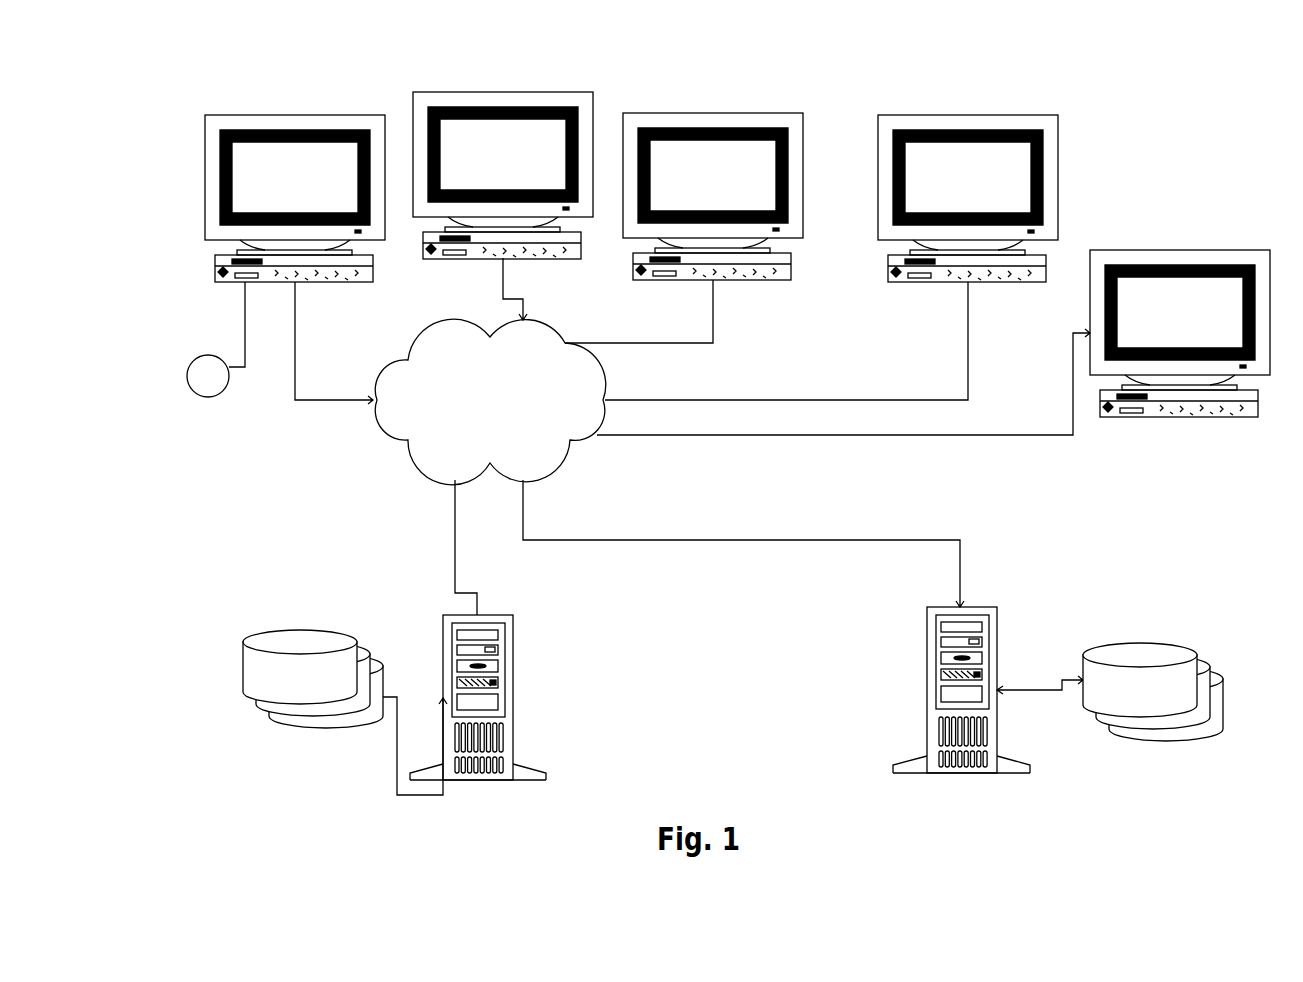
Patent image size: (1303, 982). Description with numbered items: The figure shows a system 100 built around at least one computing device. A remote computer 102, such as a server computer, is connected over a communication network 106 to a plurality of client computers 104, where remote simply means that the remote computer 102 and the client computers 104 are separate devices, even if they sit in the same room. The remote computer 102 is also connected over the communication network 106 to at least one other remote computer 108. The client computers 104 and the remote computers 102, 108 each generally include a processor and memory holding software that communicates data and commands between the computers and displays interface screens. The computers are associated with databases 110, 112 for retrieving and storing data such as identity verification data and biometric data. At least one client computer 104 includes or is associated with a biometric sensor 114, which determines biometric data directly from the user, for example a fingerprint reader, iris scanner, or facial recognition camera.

The system 100 is at (727, 421).
The remote computer 102 is at (477, 612).
The client computer 104 is at (285, 113).
The communication network 106 is at (600, 381).
The remote computer 108 is at (987, 605).
The database 110 is at (290, 627).
The database 112 is at (1133, 642).
The biometric sensor 114 is at (188, 366).